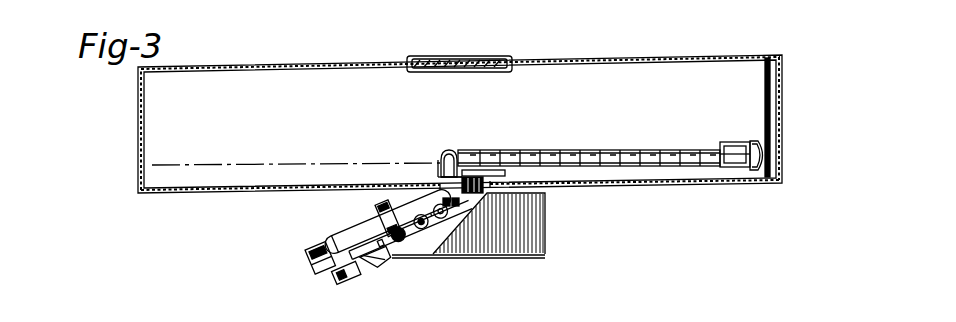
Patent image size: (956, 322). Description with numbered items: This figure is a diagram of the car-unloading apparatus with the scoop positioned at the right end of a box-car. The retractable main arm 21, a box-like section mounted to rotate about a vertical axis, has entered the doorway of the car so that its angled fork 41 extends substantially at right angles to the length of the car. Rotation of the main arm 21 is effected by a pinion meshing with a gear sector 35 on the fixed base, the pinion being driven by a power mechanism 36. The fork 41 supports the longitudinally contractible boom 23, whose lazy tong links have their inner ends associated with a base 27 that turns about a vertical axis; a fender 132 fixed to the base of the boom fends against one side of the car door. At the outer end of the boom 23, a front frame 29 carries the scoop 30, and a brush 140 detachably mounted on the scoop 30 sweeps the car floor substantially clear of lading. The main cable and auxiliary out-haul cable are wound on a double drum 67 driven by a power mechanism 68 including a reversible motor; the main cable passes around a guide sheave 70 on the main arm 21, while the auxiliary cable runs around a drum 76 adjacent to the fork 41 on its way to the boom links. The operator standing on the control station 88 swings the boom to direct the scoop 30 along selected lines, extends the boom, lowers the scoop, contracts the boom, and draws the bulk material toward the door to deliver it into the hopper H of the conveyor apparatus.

The brush 140 is at (770, 102).
The scoop 30 is at (767, 147).
The front frame 29 is at (750, 141).
The contractible boom 23 is at (601, 150).
The base 27 is at (446, 152).
The fork 41 is at (444, 172).
The fender 132 is at (500, 173).
The control station 88 is at (483, 190).
The hopper H is at (540, 233).
The drum 76 is at (450, 210).
The main arm 21 is at (410, 203).
The power mechanism 36 is at (378, 212).
The guide sheave 70 is at (403, 237).
The gear sector 35 is at (377, 262).
The power mechanism 68 is at (320, 262).
The double drum 67 is at (333, 279).